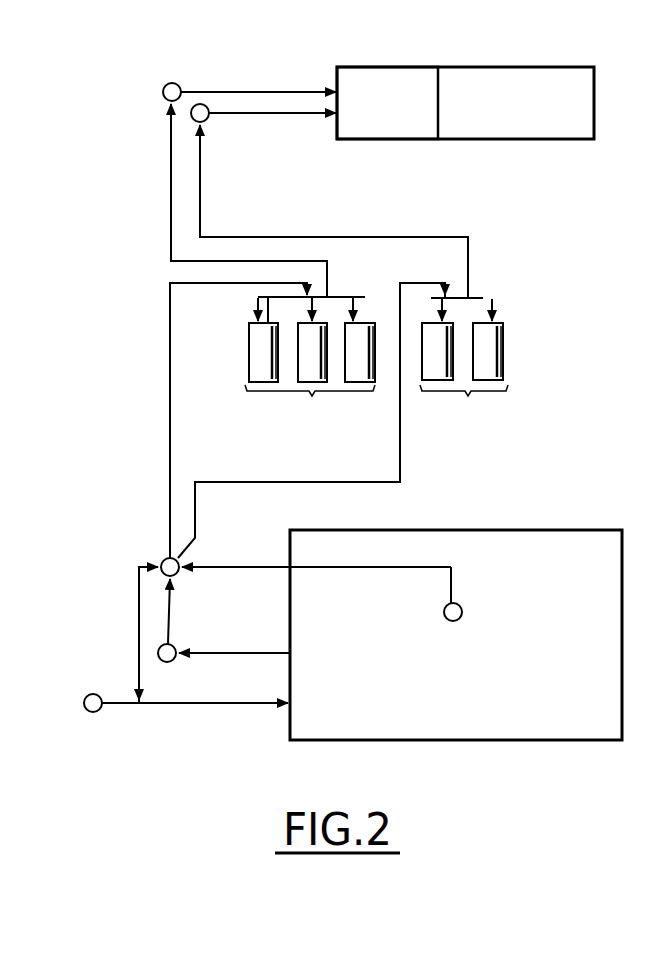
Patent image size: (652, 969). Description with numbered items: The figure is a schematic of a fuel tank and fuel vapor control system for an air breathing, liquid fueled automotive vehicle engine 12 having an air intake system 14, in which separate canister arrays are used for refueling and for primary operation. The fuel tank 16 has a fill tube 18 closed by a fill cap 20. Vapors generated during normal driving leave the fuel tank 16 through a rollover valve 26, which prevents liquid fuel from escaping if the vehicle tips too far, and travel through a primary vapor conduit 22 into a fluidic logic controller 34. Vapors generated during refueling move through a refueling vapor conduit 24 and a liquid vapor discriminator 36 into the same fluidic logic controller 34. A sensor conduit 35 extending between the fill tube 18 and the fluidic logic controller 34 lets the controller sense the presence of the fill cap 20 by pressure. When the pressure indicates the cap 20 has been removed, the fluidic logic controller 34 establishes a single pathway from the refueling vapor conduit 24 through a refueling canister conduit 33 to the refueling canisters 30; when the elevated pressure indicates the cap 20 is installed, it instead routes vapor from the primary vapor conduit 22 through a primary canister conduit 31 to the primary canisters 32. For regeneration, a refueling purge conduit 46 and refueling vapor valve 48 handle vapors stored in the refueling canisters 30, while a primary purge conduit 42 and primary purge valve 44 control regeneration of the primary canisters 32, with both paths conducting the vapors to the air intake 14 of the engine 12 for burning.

The engine 12 is at (528, 155).
The air intake system 14 is at (409, 140).
The fuel tank 16 is at (540, 528).
The fill tube 18 is at (215, 707).
The fill cap 20 is at (93, 713).
The primary vapor conduit 22 is at (242, 563).
The refueling vapor conduit 24 is at (170, 623).
The rollover valve 26 is at (463, 607).
The refueling canisters 30 is at (249, 333).
The primary canister conduit 31 is at (401, 475).
The primary canisters 32 is at (503, 344).
The refueling canister conduit 33 is at (168, 348).
The fluidic logic controller 34 is at (162, 560).
The sensor conduit 35 is at (138, 613).
The liquid vapor discriminator 36 is at (173, 660).
The primary purge conduit 42 is at (282, 118).
The primary purge valve 44 is at (203, 123).
The refueling purge conduit 46 is at (170, 160).
The refueling vapor valve 48 is at (163, 90).